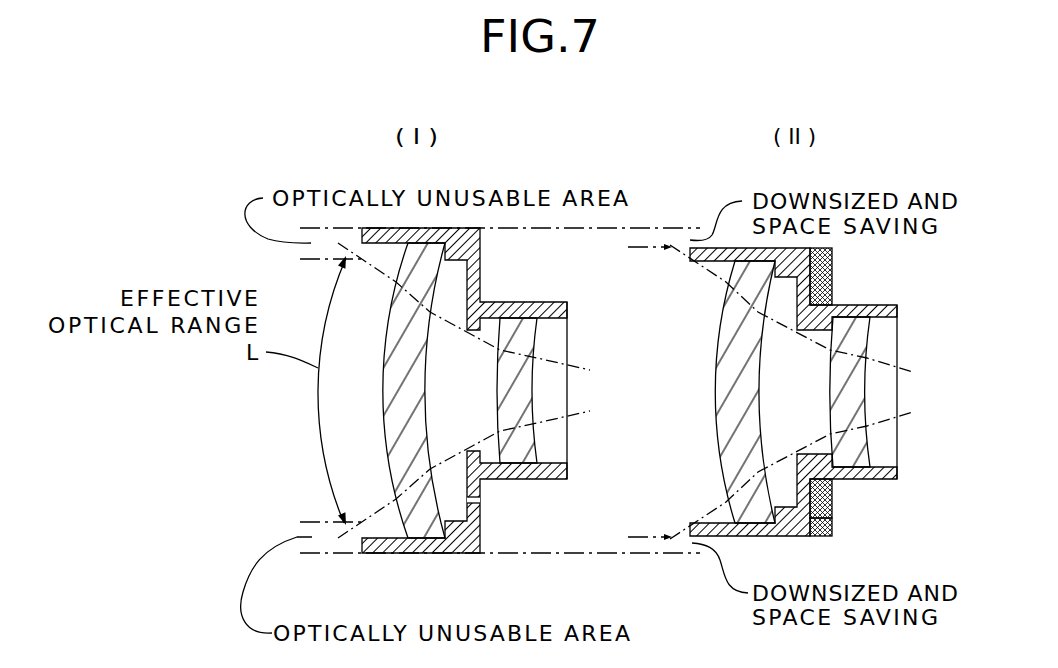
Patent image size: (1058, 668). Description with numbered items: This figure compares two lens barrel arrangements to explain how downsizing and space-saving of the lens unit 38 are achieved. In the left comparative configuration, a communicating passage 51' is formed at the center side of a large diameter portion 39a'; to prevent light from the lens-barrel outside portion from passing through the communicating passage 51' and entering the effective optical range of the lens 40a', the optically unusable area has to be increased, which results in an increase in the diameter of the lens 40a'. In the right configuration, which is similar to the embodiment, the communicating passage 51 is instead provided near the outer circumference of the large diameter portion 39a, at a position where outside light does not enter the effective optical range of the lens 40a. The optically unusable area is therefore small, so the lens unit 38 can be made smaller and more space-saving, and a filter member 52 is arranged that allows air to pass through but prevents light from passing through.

The lens unit 38 is at (798, 409).
The large diameter portion 39a is at (793, 410).
The large diameter portion 39a' is at (464, 408).
The lens 40a is at (802, 392).
The lens 40a' is at (466, 390).
The communicating passage 51 is at (858, 531).
The communicating passage 51' is at (509, 511).
The filter member 52 is at (832, 495).